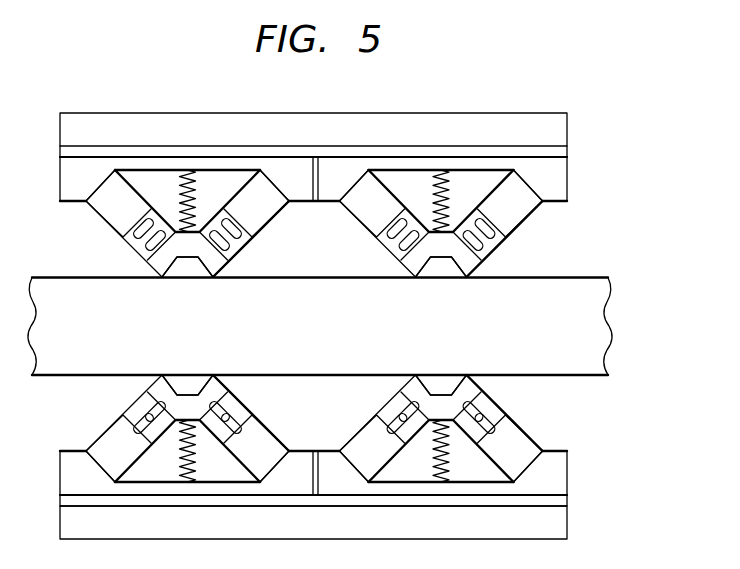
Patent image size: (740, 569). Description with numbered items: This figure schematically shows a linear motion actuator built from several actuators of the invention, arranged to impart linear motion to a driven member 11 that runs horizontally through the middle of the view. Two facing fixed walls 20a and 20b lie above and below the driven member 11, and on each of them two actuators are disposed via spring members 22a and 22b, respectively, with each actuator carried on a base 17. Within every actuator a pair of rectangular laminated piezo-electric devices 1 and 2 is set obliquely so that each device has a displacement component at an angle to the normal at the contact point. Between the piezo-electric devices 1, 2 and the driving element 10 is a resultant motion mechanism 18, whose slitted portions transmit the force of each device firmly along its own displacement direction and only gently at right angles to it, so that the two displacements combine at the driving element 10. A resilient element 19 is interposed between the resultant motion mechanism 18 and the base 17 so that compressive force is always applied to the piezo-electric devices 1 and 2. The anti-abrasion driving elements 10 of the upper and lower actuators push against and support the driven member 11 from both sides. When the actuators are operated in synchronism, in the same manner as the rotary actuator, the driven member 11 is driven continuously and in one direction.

The piezo-electric device 1 is at (112, 215).
The piezo-electric device 2 is at (253, 220).
The driving element 10 is at (452, 276).
The driven member 11 is at (577, 293).
The base 17 is at (563, 187).
The resultant motion mechanism 18 is at (403, 266).
The resilient element 19 is at (447, 197).
The fixed wall 20a is at (558, 134).
The fixed wall 20b is at (557, 529).
The spring member 22a is at (566, 152).
The spring member 22b is at (567, 502).